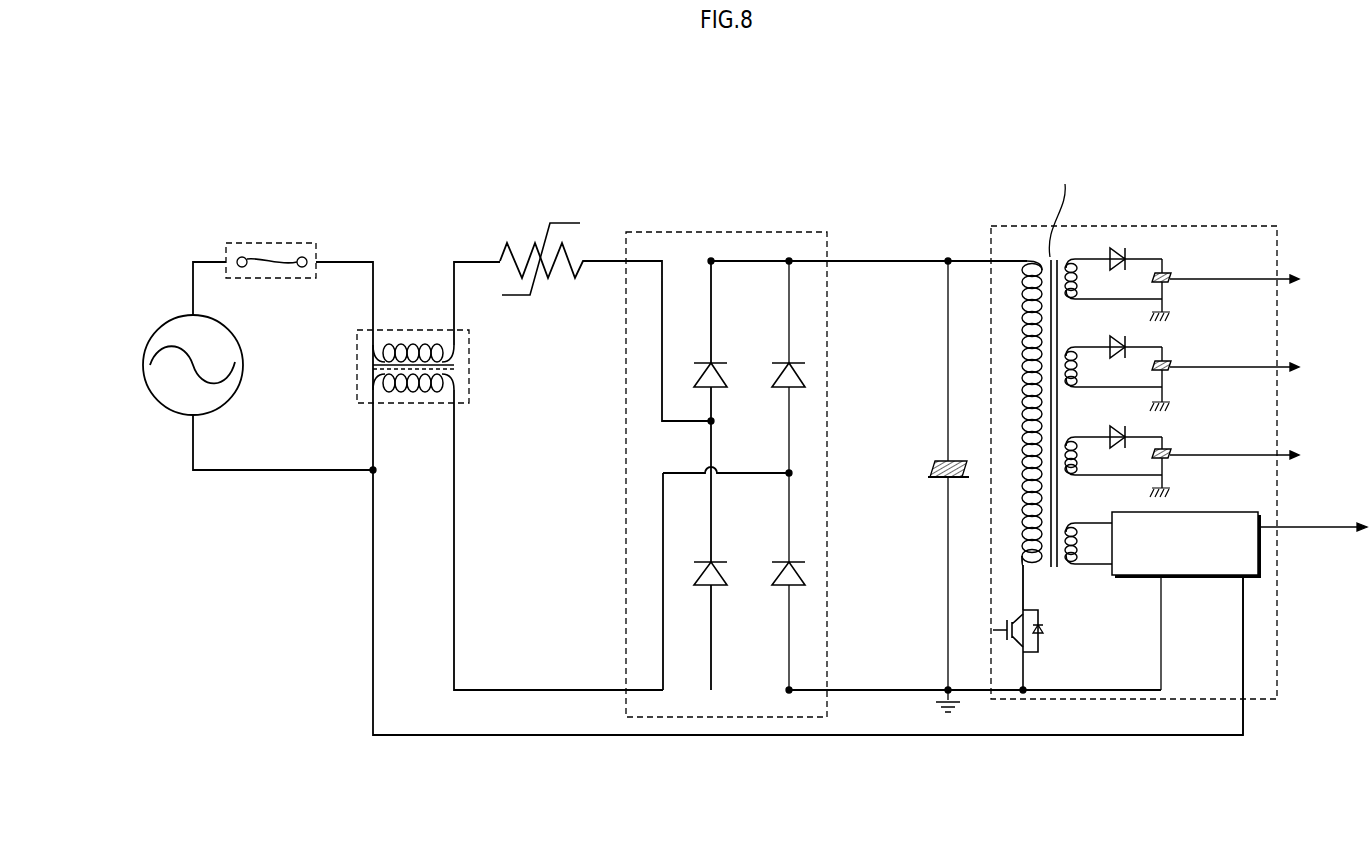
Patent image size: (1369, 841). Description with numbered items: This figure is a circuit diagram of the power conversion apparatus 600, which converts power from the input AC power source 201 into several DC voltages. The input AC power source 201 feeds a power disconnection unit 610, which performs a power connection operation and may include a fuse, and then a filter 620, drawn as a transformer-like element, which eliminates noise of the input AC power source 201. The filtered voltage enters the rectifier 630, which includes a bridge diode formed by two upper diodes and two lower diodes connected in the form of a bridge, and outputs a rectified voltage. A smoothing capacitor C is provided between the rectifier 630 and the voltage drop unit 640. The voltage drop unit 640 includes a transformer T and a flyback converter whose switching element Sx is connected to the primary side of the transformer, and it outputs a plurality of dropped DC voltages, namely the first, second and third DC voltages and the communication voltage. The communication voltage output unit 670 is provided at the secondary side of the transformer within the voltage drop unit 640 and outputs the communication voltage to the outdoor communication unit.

The power conversion apparatus 600 is at (329, 134).
The input AC power source 201 is at (155, 332).
The power disconnection unit 610 is at (300, 243).
The filter 620 is at (417, 330).
The rectifier 630 is at (812, 232).
The voltage drop unit 640 is at (1179, 449).
The communication voltage output unit 670 is at (1262, 545).